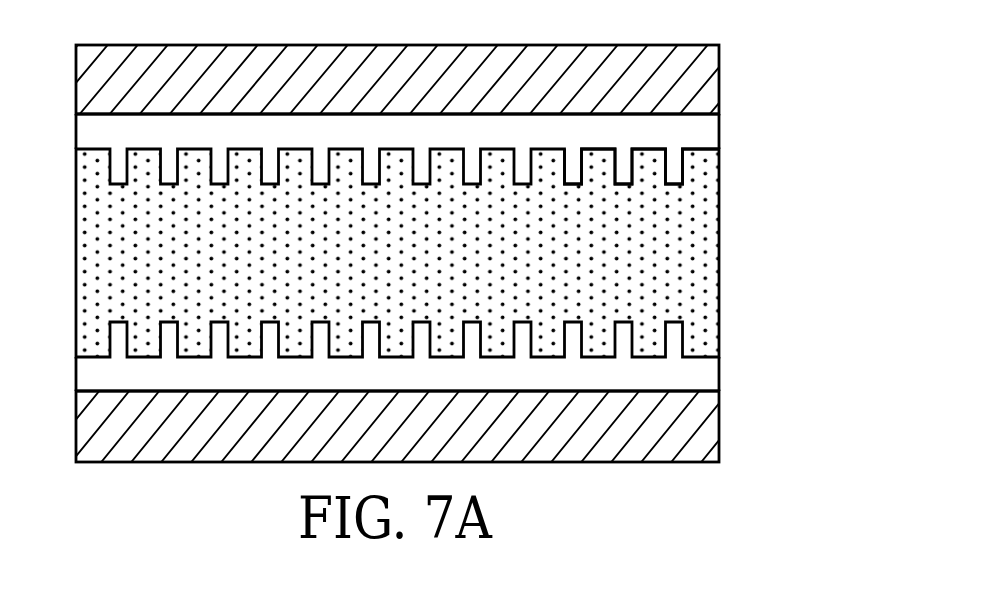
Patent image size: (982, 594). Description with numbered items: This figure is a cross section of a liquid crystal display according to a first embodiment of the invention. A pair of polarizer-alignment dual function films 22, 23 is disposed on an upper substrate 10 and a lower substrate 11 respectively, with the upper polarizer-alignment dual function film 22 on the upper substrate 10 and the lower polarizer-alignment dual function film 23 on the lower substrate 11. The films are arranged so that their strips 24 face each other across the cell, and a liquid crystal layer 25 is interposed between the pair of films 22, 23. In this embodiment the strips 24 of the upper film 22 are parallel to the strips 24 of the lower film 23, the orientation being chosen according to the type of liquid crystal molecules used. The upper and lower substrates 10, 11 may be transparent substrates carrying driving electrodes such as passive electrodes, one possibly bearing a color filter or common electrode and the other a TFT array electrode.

The upper substrate 10 is at (702, 75).
The lower substrate 11 is at (703, 422).
The upper polarizer-alignment dual function film 22 is at (702, 128).
The lower polarizer-alignment dual function film 23 is at (702, 372).
The strips 24 is at (678, 162).
The liquid crystal layer 25 is at (703, 250).